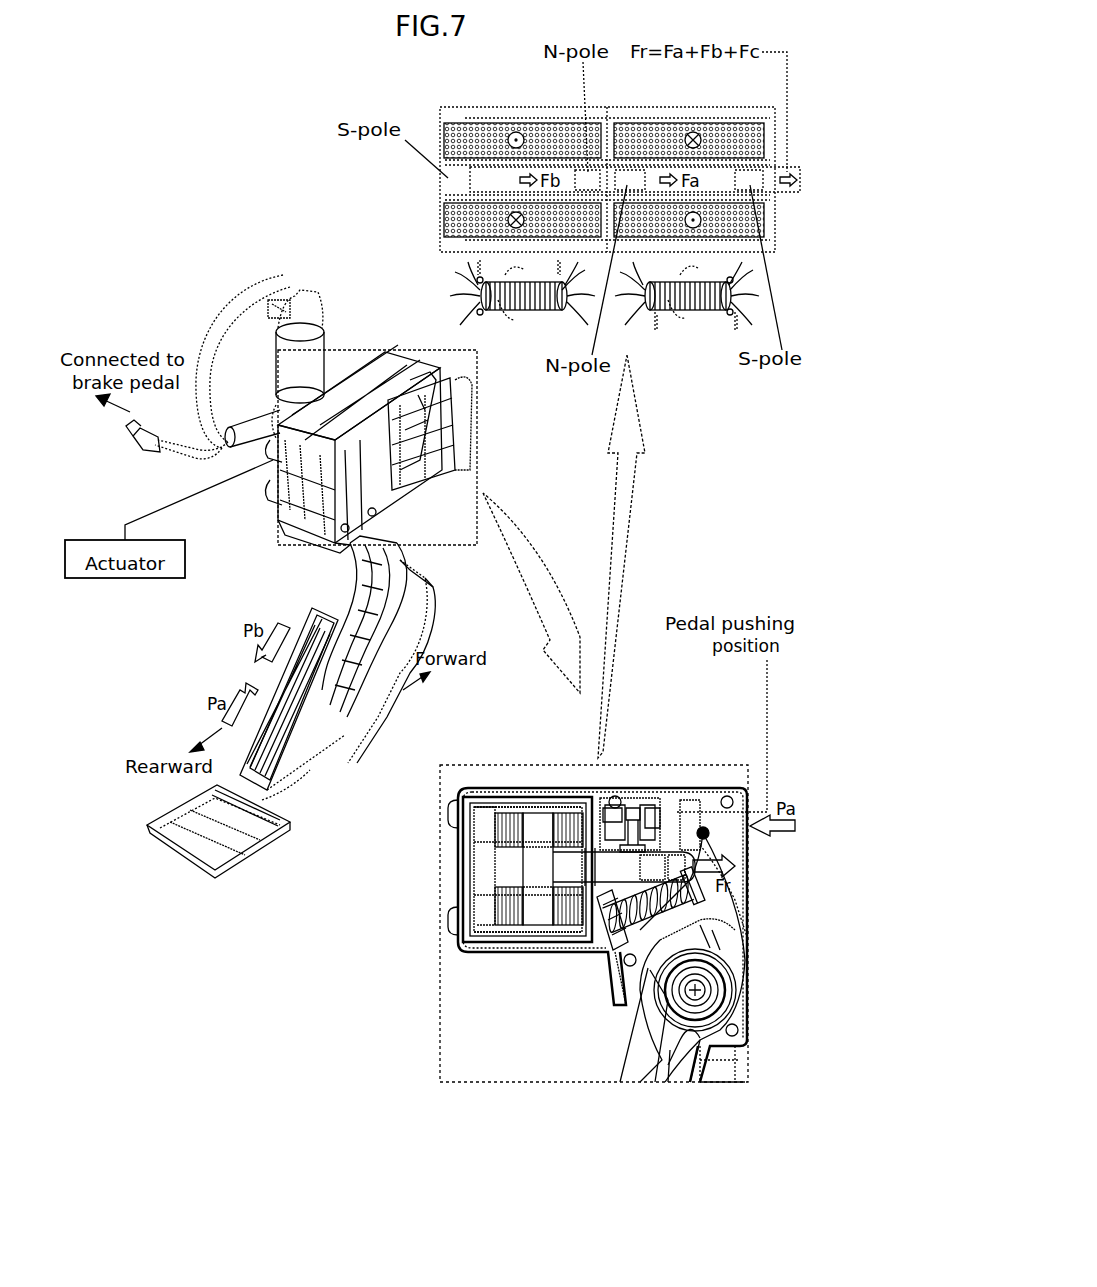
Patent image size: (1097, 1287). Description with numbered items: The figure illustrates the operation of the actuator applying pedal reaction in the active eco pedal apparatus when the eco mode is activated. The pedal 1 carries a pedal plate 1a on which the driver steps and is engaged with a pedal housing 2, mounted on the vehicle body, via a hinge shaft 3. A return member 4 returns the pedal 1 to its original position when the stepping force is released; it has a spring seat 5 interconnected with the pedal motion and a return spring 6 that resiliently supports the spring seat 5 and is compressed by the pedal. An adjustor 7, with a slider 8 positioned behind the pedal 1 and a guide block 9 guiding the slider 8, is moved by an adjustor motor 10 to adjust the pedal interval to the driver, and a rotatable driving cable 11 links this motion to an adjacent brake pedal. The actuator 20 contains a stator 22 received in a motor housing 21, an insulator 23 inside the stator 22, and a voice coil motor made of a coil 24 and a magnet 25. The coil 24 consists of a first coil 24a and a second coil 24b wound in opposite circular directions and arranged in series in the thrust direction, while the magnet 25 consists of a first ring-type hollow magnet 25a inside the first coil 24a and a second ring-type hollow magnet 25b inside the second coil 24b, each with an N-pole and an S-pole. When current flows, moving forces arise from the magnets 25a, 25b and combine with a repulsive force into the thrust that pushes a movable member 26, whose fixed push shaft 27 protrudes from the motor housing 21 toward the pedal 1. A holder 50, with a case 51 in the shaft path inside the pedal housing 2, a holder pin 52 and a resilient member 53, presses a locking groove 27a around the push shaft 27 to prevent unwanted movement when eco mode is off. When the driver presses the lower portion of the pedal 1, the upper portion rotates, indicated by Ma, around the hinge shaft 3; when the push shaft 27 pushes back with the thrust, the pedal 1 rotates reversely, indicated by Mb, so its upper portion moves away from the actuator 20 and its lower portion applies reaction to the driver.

The pedal 1 is at (368, 600).
The pedal plate 1a is at (300, 680).
The pedal housing 2 is at (365, 395).
The hinge shaft 3 is at (738, 1000).
The return member 4 is at (645, 1130).
The spring seat 5 is at (682, 932).
The return spring 6 is at (648, 970).
The adjustor 7 is at (330, 842).
The slider 8 is at (340, 740).
The guide block 9 is at (235, 820).
The adjustor motor 10 is at (330, 338).
The driving cable 11 is at (218, 330).
The actuator 20 is at (280, 522).
The motor housing 21 is at (462, 915).
The stator 22 is at (540, 950).
The insulator 23 is at (460, 945).
The coil 24 is at (535, 925).
The first coil 24a is at (720, 135).
The second coil 24b is at (538, 135).
The magnet 25 is at (513, 713).
The first ring-type hollow magnet 25a is at (668, 133).
The second ring-type hollow magnet 25b is at (493, 130).
The movable member 26 is at (518, 866).
The push shaft 27 is at (790, 195).
The locking groove 27a is at (612, 952).
The holder 50 is at (400, 395).
The case 51 is at (645, 815).
The holder pin 52 is at (635, 800).
The resilient member 53 is at (665, 820).
The rotation of pedal upper portion Ma is at (748, 957).
The reverse rotation of pedal Mb is at (740, 1045).